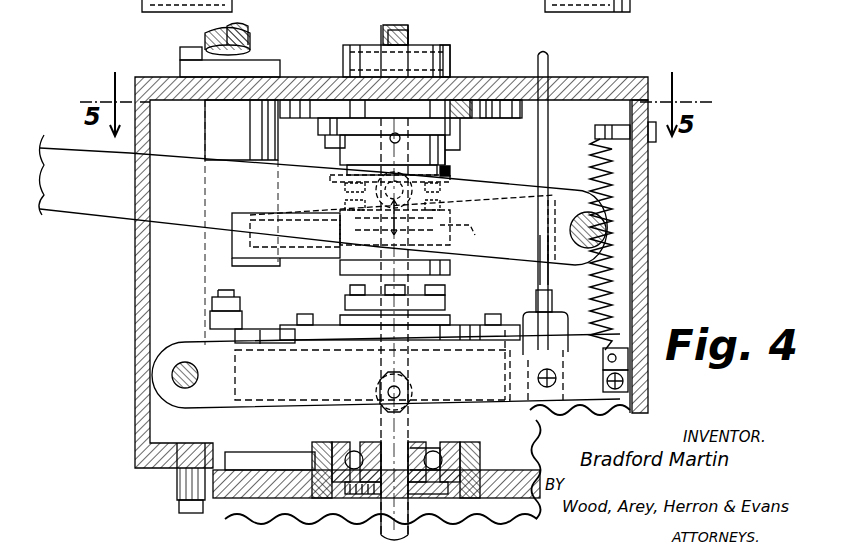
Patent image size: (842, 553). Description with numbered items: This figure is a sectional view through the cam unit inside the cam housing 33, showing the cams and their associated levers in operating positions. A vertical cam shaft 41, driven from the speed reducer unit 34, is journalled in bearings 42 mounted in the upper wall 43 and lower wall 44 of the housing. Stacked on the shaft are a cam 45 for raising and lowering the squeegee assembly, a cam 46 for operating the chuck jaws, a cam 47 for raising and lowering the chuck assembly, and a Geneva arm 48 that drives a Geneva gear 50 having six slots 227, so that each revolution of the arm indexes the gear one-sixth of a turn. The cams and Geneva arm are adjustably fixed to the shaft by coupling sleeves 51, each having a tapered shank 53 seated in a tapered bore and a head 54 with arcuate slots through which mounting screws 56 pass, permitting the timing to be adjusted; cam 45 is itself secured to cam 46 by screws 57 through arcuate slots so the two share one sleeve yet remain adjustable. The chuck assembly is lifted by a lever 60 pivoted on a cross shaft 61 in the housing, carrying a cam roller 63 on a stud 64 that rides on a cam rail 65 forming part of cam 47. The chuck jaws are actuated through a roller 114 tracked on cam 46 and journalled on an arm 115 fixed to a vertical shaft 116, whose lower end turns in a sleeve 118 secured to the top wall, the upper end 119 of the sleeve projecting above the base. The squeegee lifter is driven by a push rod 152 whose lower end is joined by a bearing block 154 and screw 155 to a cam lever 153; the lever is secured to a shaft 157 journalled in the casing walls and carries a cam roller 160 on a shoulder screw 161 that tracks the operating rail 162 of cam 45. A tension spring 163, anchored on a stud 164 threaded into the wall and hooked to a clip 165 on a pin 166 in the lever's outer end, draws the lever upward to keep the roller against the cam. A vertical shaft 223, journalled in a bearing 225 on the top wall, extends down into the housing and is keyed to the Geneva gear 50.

The cam housing 33 is at (131, 290).
The speed reducer unit 34 is at (280, 510).
The cam shaft 41 is at (400, 27).
The bearings 42 is at (452, 54).
The upper wall 43 is at (505, 85).
The lower wall 44 is at (243, 483).
The cam 45 is at (244, 352).
The cam 46 is at (260, 343).
The cam 47 is at (235, 247).
The Geneva arm 48 is at (322, 128).
The Geneva gear 50 is at (505, 112).
The coupling sleeves 51 is at (450, 318).
The tapered shank 53 is at (454, 231).
The head 54 is at (452, 177).
The mounting screws 56 is at (346, 204).
The screws 57 is at (303, 313).
The lever 60 is at (68, 158).
The cross shaft 61 is at (588, 212).
The cam roller 63 is at (346, 184).
The stud 64 is at (395, 224).
The cam rail 65 is at (242, 214).
The roller 114 is at (211, 323).
The arm 115 is at (213, 304).
The vertical shaft 116 is at (258, 32).
The sleeve 118 is at (215, 134).
The upper end 119 is at (278, 45).
The push rod 152 is at (550, 54).
The cam lever 153 is at (262, 404).
The bearing block 154 is at (560, 326).
The screw 155 is at (552, 388).
The shaft 157 is at (183, 389).
The cam roller 160 is at (376, 391).
The shoulder screw 161 is at (404, 393).
The operating rail 162 is at (505, 384).
The tension spring 163 is at (630, 193).
The stud 164 is at (612, 128).
The clip 165 is at (615, 356).
The pin 166 is at (630, 391).
The vertical shaft 223 is at (412, 42).
The bearing 225 is at (372, 48).
The slots 227 is at (462, 112).